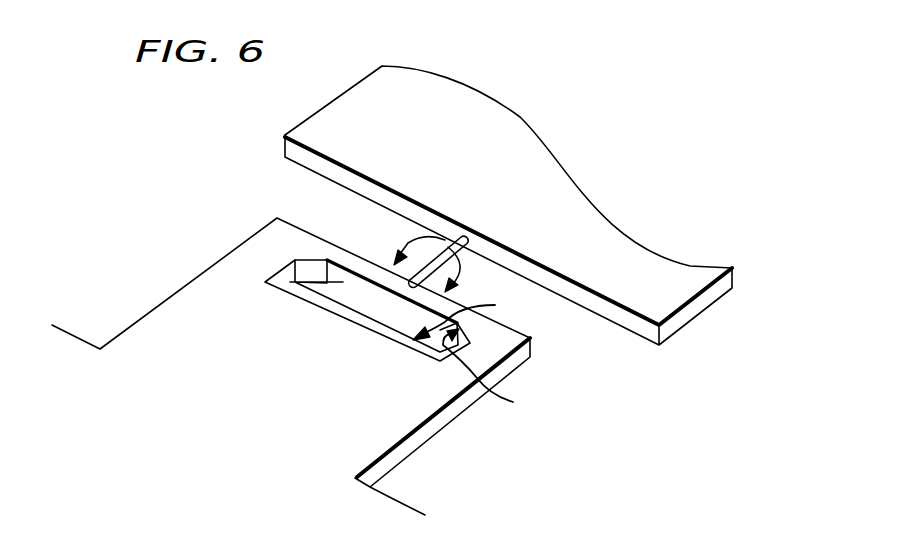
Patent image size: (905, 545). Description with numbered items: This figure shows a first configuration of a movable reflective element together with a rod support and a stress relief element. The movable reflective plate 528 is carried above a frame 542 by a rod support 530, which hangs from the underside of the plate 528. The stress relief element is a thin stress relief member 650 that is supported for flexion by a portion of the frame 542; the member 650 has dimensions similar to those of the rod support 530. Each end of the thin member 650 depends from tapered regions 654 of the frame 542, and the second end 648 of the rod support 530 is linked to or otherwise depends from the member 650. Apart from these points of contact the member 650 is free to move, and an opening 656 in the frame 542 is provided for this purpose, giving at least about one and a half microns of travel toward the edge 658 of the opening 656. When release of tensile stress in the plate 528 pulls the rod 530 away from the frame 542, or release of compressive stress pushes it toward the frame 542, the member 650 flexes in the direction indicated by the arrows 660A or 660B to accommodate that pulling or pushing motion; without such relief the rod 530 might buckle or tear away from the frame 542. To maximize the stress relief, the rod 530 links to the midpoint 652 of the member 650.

The plate 528 is at (408, 125).
The rod support 530 is at (449, 223).
The frame 542 is at (144, 353).
The second end 648 is at (435, 295).
The stress relief member 650 is at (333, 282).
The midpoint 652 is at (385, 298).
The tapered regions 654 is at (320, 253).
The opening 656 is at (398, 330).
The edge 658 is at (410, 347).
The sliding direction arrow A 660A is at (487, 381).
The sliding direction arrow B 660B is at (476, 317).